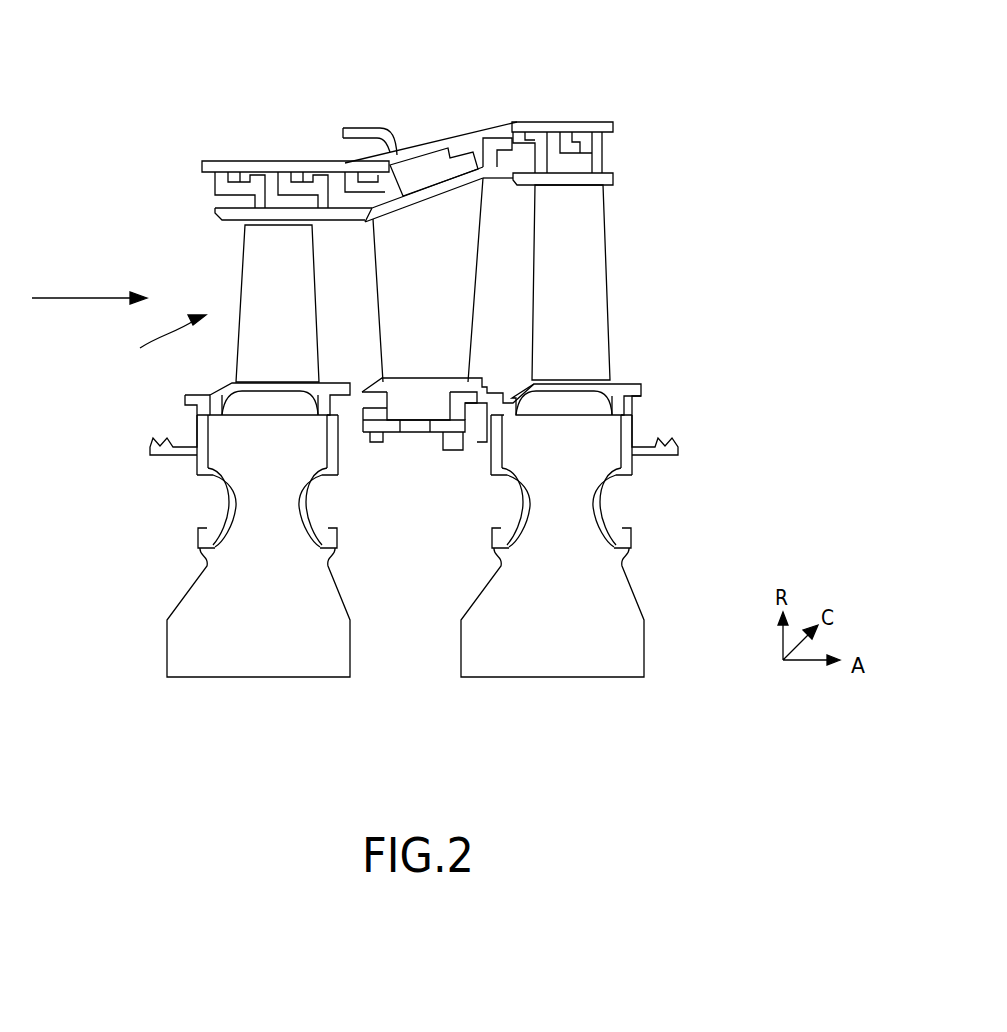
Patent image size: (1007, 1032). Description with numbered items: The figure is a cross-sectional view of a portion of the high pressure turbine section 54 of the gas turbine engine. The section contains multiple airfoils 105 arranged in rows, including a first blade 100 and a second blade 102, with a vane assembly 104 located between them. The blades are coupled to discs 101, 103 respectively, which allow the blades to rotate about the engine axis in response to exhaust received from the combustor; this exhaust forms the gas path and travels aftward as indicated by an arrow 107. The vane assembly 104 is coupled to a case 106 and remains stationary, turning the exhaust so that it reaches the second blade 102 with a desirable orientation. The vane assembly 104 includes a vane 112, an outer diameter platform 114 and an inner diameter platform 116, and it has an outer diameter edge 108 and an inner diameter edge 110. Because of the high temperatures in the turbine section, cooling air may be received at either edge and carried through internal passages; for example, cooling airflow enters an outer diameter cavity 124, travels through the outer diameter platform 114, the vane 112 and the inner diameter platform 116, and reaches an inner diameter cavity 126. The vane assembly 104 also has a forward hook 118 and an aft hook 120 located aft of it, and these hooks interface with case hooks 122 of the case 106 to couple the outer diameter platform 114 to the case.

The high pressure turbine section 54 is at (677, 102).
The first blade 100 is at (236, 280).
The disc 101 is at (333, 606).
The second blade 102 is at (585, 233).
The disc 103 is at (641, 650).
The vane assembly 104 is at (385, 292).
The airfoils 105 is at (152, 339).
The case 106 is at (480, 145).
The arrow 107 is at (70, 296).
The outer diameter edge 108 is at (402, 112).
The inner diameter edge 110 is at (438, 434).
The vane 112 is at (436, 275).
The outer diameter platform 114 is at (405, 200).
The inner diameter platform 116 is at (485, 386).
The forward hook 118 is at (385, 182).
The aft hook 120 is at (493, 163).
The case hooks 122 is at (455, 150).
The outer diameter cavity 124 is at (440, 175).
The inner diameter cavity 126 is at (400, 410).